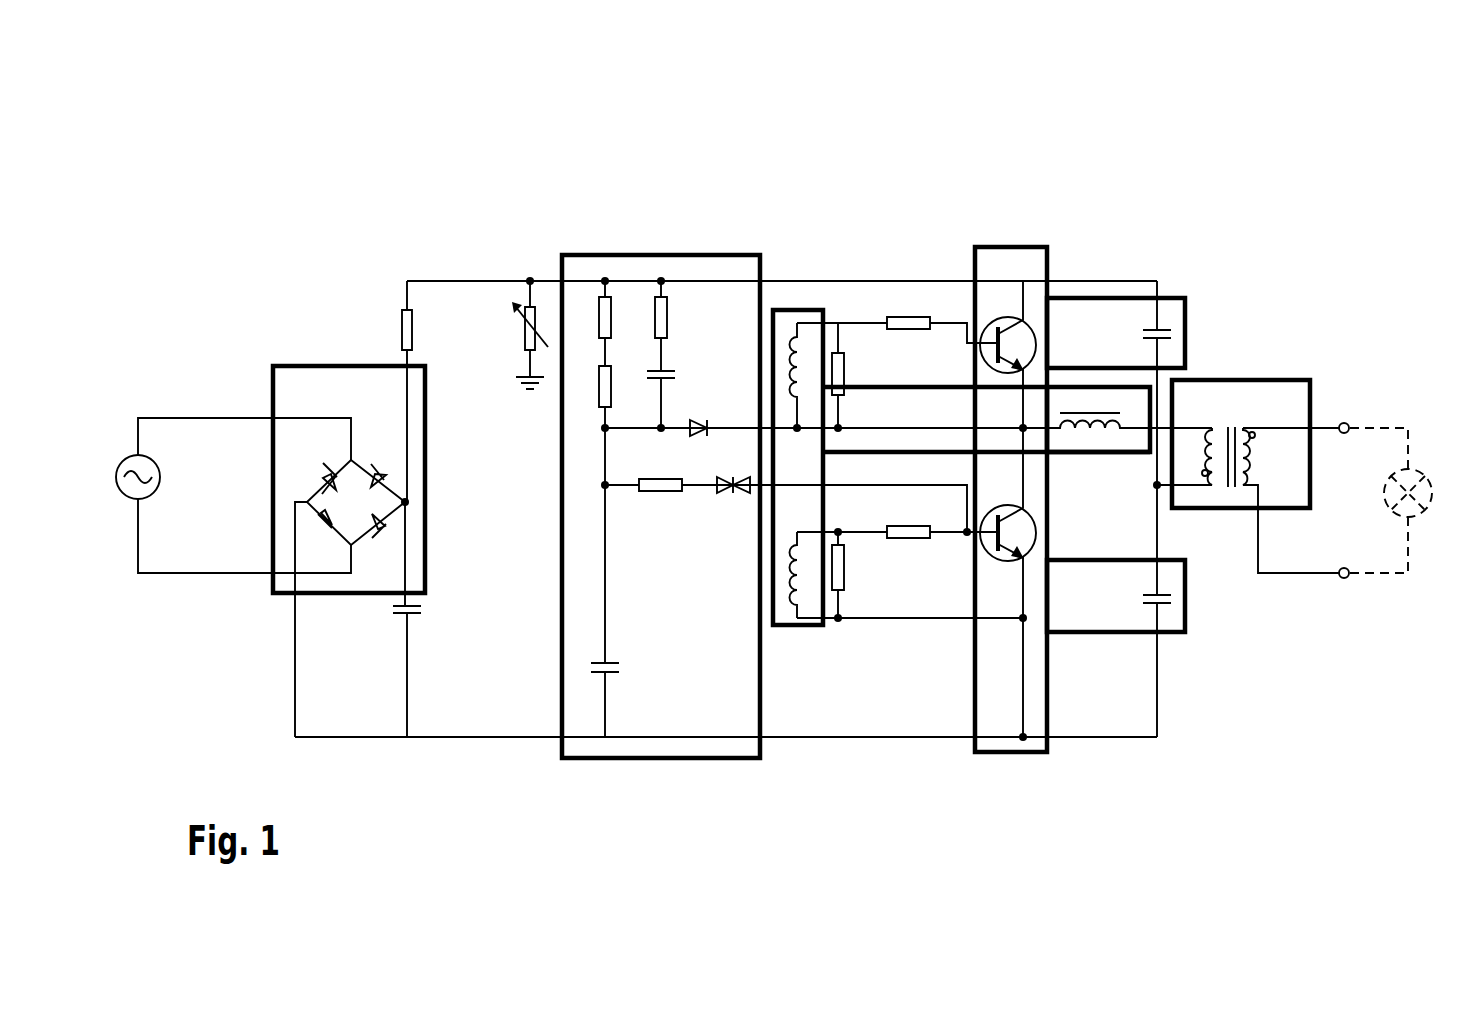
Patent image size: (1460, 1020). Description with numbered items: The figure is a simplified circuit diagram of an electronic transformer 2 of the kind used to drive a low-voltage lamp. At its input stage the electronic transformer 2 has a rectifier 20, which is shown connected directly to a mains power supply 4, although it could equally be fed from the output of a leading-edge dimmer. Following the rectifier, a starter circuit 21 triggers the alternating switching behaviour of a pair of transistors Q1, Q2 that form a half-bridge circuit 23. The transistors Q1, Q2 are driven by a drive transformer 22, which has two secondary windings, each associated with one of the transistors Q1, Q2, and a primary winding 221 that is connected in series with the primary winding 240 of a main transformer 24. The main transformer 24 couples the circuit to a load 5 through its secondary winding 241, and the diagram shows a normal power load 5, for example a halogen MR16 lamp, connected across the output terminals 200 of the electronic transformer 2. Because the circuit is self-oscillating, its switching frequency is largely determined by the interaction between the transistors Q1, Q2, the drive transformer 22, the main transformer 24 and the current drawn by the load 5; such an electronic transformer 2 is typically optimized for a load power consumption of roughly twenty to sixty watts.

The electronic transformer 2 is at (431, 176).
The mains power supply 4 is at (121, 459).
The load 5 is at (1417, 521).
The rectifier 20 is at (297, 365).
The starter circuit 21 is at (623, 255).
The drive transformer 22 is at (797, 310).
The half-bridge circuit 23 is at (1110, 298).
The primary winding 221 is at (1093, 440).
The main transformer 24 is at (1220, 510).
The primary winding 240 is at (1212, 432).
The secondary winding 241 is at (1252, 447).
The output terminals 200 is at (1346, 422).
The transistor Q1 is at (1033, 326).
The transistor Q2 is at (1029, 554).